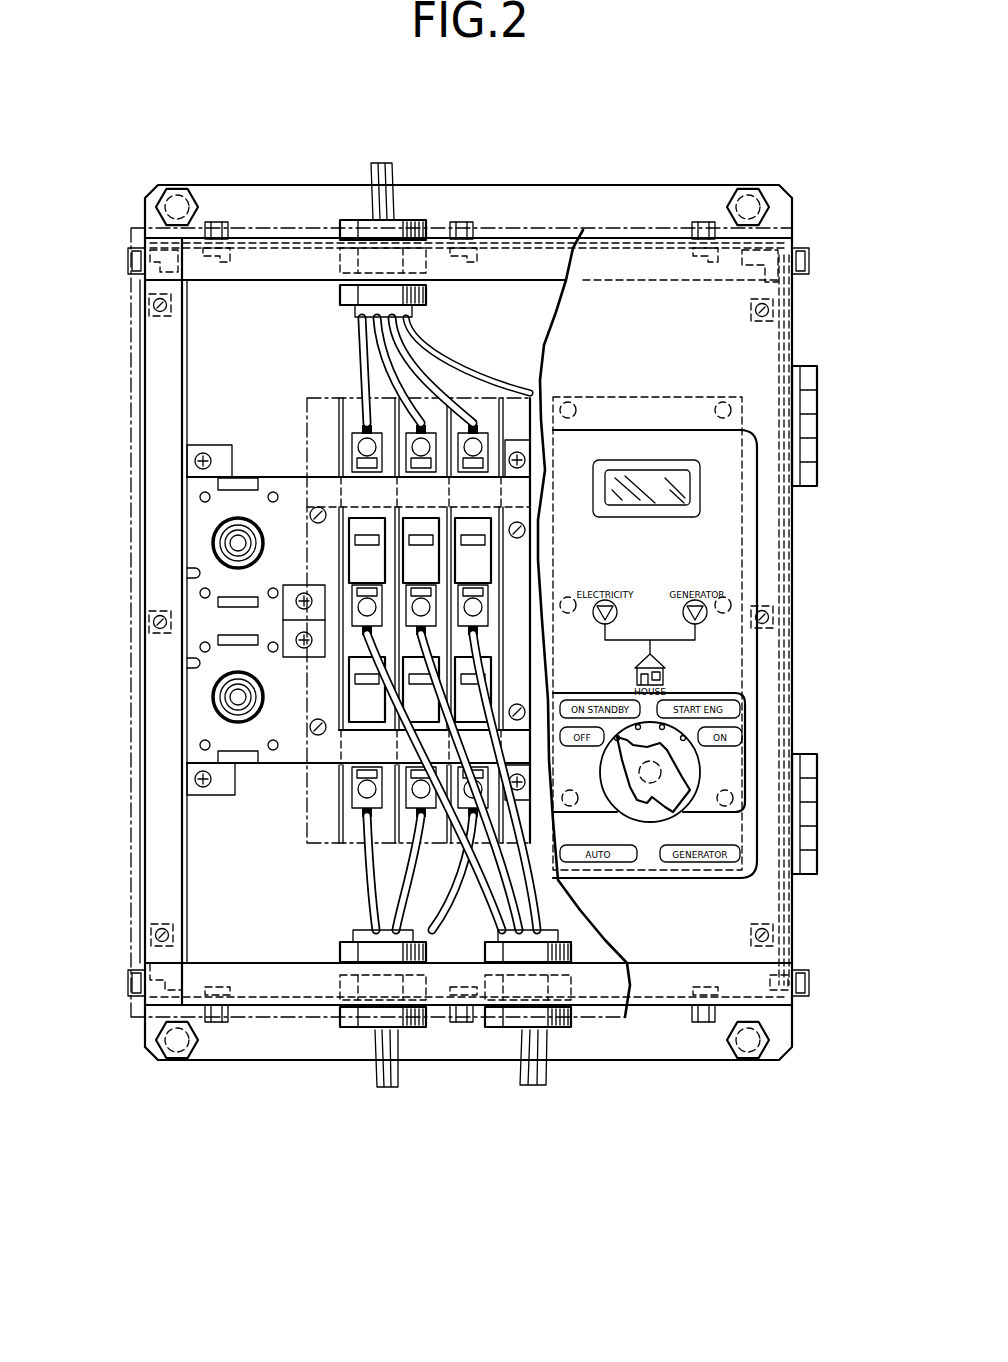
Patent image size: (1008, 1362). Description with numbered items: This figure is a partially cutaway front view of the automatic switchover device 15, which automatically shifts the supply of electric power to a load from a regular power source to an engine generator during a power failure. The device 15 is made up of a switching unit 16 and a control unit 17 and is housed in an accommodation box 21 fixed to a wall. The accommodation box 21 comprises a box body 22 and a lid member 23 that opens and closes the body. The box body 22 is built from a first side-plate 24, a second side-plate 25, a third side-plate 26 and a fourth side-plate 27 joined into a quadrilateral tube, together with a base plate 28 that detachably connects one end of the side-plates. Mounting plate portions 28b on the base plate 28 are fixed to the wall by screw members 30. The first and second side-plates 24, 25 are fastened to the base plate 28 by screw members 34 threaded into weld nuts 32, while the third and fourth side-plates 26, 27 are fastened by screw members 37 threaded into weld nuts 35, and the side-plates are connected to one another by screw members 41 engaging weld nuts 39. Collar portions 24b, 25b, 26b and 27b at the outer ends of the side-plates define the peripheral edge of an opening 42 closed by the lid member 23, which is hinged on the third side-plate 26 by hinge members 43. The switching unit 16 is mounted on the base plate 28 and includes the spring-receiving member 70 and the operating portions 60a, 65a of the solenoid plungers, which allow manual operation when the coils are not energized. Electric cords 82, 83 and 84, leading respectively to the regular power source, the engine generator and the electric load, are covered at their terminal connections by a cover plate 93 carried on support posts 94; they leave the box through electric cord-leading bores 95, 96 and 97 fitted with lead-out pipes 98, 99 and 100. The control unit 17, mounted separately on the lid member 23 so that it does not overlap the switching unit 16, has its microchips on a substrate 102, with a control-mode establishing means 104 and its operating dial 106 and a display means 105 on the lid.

The automatic switchover device 15 is at (657, 120).
The switching unit 16 is at (492, 390).
The control unit 17 is at (650, 385).
The accommodation box 21 is at (705, 1160).
The box body 22 is at (583, 1032).
The lid member 23 is at (693, 965).
The first side-plate 24 is at (258, 188).
The collar portion 24b is at (322, 245).
The second side-plate 25 is at (303, 975).
The collar portion 25b is at (305, 962).
The third side-plate 26 is at (770, 675).
The collar portion 26b is at (772, 700).
The fourth side-plate 27 is at (140, 698).
The collar portion 27b is at (160, 425).
The base plate 28 is at (280, 950).
The mounting plate portion 28b is at (283, 212).
The screw member 30 is at (175, 196).
The weld nut 32 is at (228, 252).
The screw member 34 is at (461, 222).
The weld nut 35 is at (152, 304).
The screw member 37 is at (155, 318).
The weld nut 39 is at (172, 255).
The screw member 41 is at (131, 258).
The opening 42 is at (192, 850).
The hinge member 43 is at (817, 445).
The operating portion 60a is at (240, 722).
The operating portion 65a is at (250, 536).
The spring-receiving member 70 is at (285, 658).
The electric cords 82 is at (396, 180).
The electric cords 83 is at (380, 1090).
The electric cords 84 is at (534, 1088).
The cover plate 93 is at (547, 355).
The support post 94 is at (526, 526).
The electric cord-leading bore 95 is at (365, 260).
The electric cord-leading bore 96 is at (405, 958).
The electric cord-leading bore 97 is at (568, 991).
The lead-out pipe 98 is at (356, 290).
The lead-out pipe 99 is at (342, 1001).
The lead-out pipe 100 is at (555, 952).
The substrate 102 is at (688, 398).
The control-mode establishing means 104 is at (643, 813).
The display means 105 is at (648, 500).
The operating dial 106 is at (673, 767).